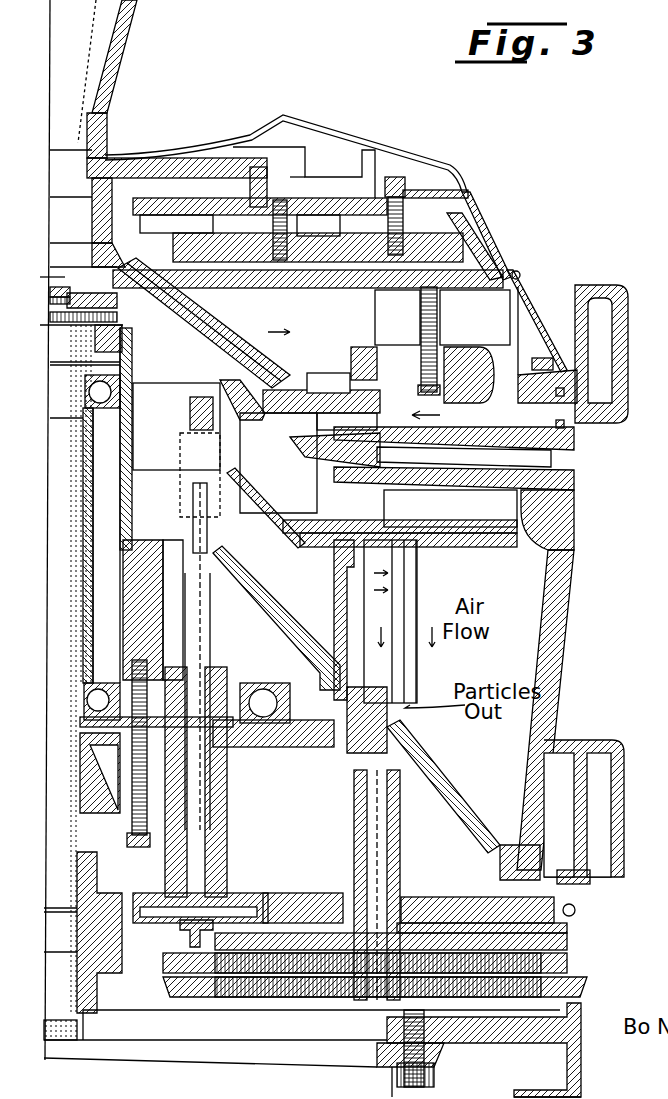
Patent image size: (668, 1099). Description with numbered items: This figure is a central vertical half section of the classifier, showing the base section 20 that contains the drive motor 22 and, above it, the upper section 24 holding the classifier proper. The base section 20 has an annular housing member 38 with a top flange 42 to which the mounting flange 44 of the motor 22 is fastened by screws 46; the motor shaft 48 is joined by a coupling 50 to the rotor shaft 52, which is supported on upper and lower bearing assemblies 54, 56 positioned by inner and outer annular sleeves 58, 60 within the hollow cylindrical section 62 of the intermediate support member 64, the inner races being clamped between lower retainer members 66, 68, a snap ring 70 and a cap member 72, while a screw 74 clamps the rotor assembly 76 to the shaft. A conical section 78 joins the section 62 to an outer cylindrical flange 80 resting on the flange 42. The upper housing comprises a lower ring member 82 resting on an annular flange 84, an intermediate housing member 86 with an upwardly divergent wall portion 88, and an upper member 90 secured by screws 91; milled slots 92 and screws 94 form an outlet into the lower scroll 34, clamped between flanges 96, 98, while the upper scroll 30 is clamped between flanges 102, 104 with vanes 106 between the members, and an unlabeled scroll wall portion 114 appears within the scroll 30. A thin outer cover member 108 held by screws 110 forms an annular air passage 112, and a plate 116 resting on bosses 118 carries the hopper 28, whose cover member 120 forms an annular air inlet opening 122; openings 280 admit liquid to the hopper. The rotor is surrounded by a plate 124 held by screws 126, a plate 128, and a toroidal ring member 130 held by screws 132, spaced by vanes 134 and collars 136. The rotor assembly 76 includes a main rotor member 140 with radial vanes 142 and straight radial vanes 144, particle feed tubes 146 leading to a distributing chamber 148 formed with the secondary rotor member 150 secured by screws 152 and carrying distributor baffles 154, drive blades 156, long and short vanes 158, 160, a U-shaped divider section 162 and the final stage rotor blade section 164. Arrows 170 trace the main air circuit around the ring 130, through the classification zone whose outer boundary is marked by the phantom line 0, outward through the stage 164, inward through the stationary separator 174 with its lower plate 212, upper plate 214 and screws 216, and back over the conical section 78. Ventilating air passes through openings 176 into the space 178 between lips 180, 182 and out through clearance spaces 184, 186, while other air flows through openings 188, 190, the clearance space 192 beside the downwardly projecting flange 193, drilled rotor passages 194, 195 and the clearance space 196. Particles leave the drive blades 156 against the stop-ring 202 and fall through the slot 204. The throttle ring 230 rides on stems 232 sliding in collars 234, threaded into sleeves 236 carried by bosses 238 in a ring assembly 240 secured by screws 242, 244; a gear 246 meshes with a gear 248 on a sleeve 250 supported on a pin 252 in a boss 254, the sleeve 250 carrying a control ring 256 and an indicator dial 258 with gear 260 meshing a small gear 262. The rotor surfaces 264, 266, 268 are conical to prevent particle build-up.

The base section 20 is at (598, 1020).
The drive motor 22 is at (302, 1054).
The upper section 24 is at (568, 622).
The hopper 28 is at (130, 42).
The upper scroll 30 is at (603, 282).
The lower scroll 34 is at (624, 808).
The annular housing member 38 is at (566, 1068).
The top flange 42 is at (460, 1050).
The mounting flange 44 is at (438, 1070).
The screws 46 is at (396, 1076).
The motor shaft 48 is at (72, 1000).
The coupling 50 is at (118, 876).
The rotor shaft 52 is at (80, 613).
The upper bearing assembly 54 is at (80, 385).
The lower bearing assembly 56 is at (80, 688).
The inner annular sleeve 58 is at (78, 492).
The outer annular sleeve 60 is at (80, 568).
The hollow cylindrical section 62 is at (150, 512).
The intermediate support member 64 is at (296, 608).
The lower retainer member 66 is at (80, 738).
The lower retainer member 68 is at (80, 772).
The snap ring 70 is at (82, 808).
The cap member 72 is at (66, 343).
The screw 74 is at (54, 287).
The rotor assembly 76 is at (306, 230).
The conical section 78 is at (392, 765).
The outer cylindrical flange 80 is at (572, 945).
The lower ring member 82 is at (578, 908).
The annular flange 84 is at (492, 906).
The intermediate housing member 86 is at (552, 695).
The upwardly divergent wall portion 88 is at (548, 628).
The upper member 90 is at (516, 270).
The screws 91 is at (544, 356).
The milled slots 92 is at (518, 835).
The screws 94 is at (570, 926).
The flange 96 is at (572, 882).
The flange 98 is at (555, 770).
The passage 0 is at (499, 390).
The flange 102 is at (580, 428).
The flange 104 is at (590, 393).
The vanes 106 is at (548, 415).
The outer cover member 108 is at (500, 240).
The screws 110 is at (405, 160).
The annular air passage 112 is at (482, 214).
The channel 114 is at (608, 355).
The plate 116 is at (162, 156).
The bosses 118 is at (262, 196).
The outer cover member 120 is at (200, 152).
The annular air inlet opening 122 is at (472, 192).
The plate 124 is at (386, 200).
The screws 126 is at (295, 195).
The plate 128 is at (475, 317).
The toroidal ring member 130 is at (482, 362).
The screws 132 is at (418, 326).
The vanes 134 is at (398, 315).
The cylindrical collars 136 is at (438, 325).
The main rotor member 140 is at (81, 298).
The radial vanes 142 is at (276, 318).
The straight radial vanes 144 is at (328, 308).
The particle feed tubes 146 is at (230, 330).
The distributing chamber 148 is at (272, 414).
The secondary rotor member 150 is at (292, 468).
The screws 152 is at (356, 331).
The distributor baffles 154 is at (341, 349).
The drive blades 156 is at (321, 392).
The long straight radial vanes 158 is at (335, 450).
The short straight radial vanes 160 is at (367, 518).
The U-shaped divider section 162 is at (318, 460).
The final stage rotor blade section 164 is at (460, 538).
The arrows 170 is at (346, 483).
The stationary separator 174 is at (410, 605).
The openings 176 is at (474, 200).
The space 178 is at (450, 508).
The lip 180 is at (574, 478).
The lip 182 is at (454, 458).
The clearance space 184 is at (400, 505).
The clearance space 186 is at (347, 423).
The opening 188 is at (304, 171).
The opening 190 is at (176, 223).
The clearance space 192 is at (88, 244).
The downwardly projecting flange 193 is at (92, 210).
The drilled rotor passage 194 is at (160, 253).
The drilled rotor passage 195 is at (172, 299).
The clearance space 196 is at (133, 338).
The stop-ring 202 is at (384, 450).
The slot 204 is at (461, 392).
The lower plate 212 is at (410, 695).
The upper plate 214 is at (410, 552).
The screws 216 is at (340, 628).
The throttle ring 230 is at (188, 432).
The stems 232 is at (195, 510).
The collars 234 is at (215, 545).
The sleeves 236 is at (232, 840).
The bosses 238 is at (228, 818).
The ring assembly 240 is at (255, 750).
The inner screws 242 is at (142, 850).
The outer screws 244 is at (322, 752).
The gear 246 is at (240, 893).
The gear 248 is at (292, 893).
The sleeve 250 is at (400, 895).
The pin 252 is at (390, 833).
The boss 254 is at (425, 795).
The control ring 256 is at (443, 994).
The indicator dial 258 is at (572, 967).
The gear 260 is at (310, 912).
The small gear 262 is at (182, 936).
The rotor surface 264 is at (302, 482).
The rotor surface 266 is at (226, 386).
The rotor surface 268 is at (275, 321).
The openings 280 is at (118, 178).